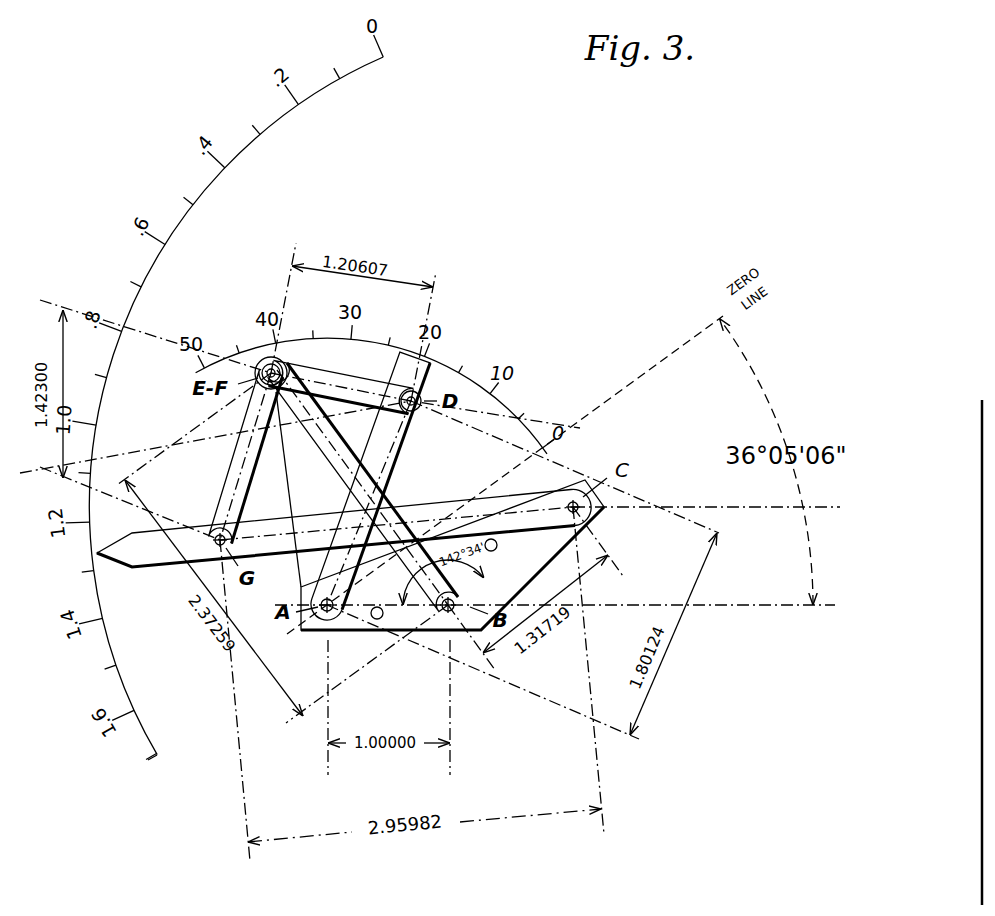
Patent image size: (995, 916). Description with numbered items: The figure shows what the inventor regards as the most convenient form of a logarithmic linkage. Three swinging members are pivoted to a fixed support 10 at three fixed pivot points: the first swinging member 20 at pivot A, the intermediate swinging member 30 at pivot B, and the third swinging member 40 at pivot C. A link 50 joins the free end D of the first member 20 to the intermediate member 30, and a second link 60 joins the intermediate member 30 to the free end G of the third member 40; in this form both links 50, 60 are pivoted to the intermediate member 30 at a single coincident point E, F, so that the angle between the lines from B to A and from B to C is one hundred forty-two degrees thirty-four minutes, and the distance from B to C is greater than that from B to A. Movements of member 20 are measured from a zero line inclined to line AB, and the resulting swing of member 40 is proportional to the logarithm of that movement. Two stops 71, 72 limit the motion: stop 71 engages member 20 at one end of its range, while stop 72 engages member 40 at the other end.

The fixed support 10 is at (410, 632).
The first swinging member 20 is at (418, 447).
The intermediate swinging member 30 is at (335, 459).
The third swinging member 40 is at (440, 501).
The link 50 is at (245, 440).
The link 60 is at (349, 385).
The stop 71 is at (374, 620).
The stop 72 is at (497, 549).